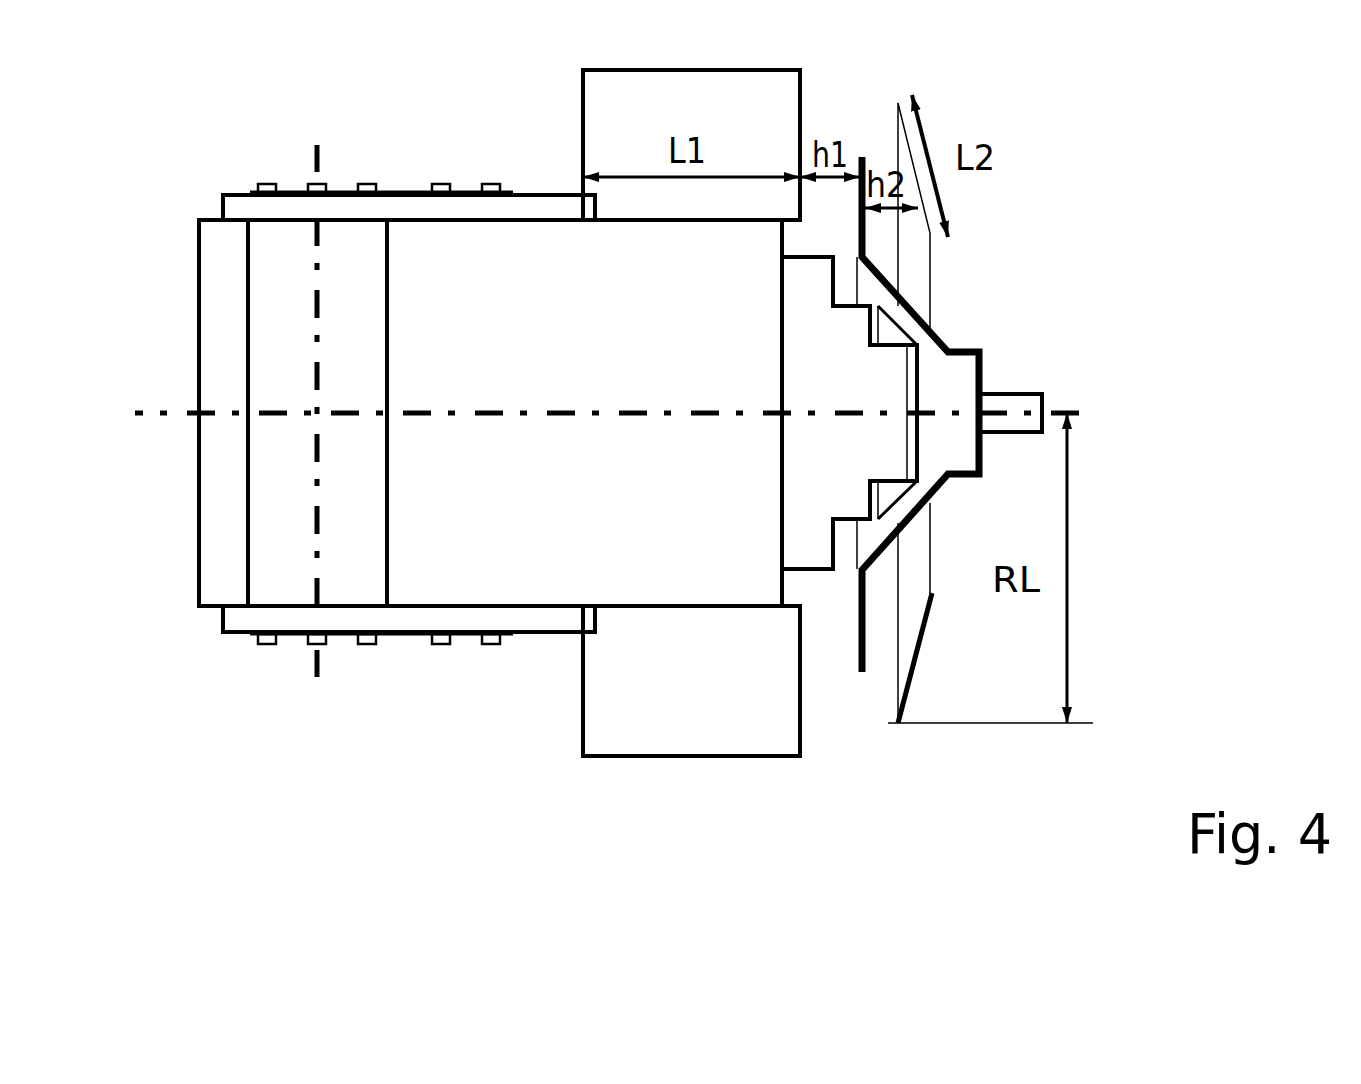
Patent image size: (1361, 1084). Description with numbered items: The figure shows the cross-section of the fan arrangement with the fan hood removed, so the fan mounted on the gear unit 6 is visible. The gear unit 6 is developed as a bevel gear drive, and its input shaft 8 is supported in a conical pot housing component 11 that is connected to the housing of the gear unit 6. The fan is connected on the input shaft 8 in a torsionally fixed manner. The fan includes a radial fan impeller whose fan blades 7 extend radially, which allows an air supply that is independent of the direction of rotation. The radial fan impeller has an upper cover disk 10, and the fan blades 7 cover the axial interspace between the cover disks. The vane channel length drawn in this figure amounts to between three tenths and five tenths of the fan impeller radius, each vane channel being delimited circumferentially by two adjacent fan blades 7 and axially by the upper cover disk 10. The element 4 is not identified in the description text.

The heat exchanger 4 is at (687, 103).
The gear unit 6 is at (474, 559).
The fan blades 7 is at (887, 280).
The input shaft 8 is at (1020, 403).
The upper cover disk 10 is at (917, 667).
The conical pot housing component 11 is at (796, 525).